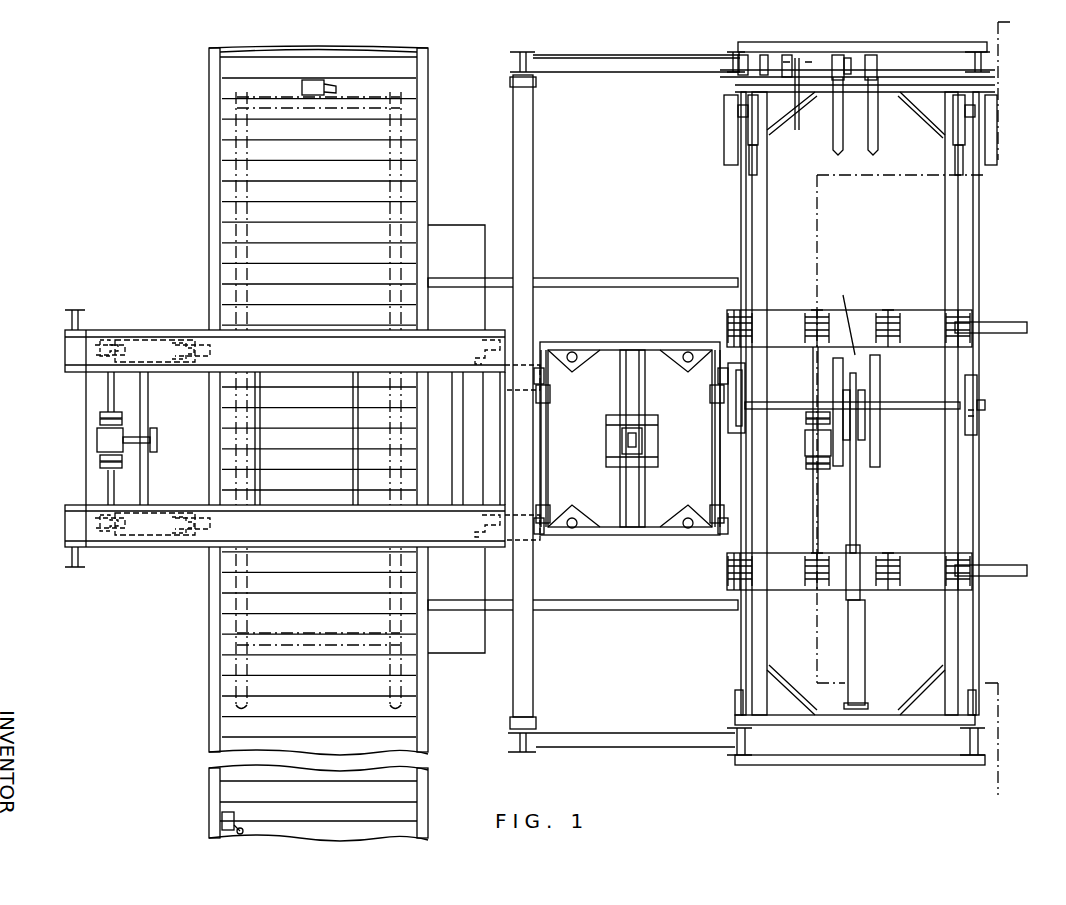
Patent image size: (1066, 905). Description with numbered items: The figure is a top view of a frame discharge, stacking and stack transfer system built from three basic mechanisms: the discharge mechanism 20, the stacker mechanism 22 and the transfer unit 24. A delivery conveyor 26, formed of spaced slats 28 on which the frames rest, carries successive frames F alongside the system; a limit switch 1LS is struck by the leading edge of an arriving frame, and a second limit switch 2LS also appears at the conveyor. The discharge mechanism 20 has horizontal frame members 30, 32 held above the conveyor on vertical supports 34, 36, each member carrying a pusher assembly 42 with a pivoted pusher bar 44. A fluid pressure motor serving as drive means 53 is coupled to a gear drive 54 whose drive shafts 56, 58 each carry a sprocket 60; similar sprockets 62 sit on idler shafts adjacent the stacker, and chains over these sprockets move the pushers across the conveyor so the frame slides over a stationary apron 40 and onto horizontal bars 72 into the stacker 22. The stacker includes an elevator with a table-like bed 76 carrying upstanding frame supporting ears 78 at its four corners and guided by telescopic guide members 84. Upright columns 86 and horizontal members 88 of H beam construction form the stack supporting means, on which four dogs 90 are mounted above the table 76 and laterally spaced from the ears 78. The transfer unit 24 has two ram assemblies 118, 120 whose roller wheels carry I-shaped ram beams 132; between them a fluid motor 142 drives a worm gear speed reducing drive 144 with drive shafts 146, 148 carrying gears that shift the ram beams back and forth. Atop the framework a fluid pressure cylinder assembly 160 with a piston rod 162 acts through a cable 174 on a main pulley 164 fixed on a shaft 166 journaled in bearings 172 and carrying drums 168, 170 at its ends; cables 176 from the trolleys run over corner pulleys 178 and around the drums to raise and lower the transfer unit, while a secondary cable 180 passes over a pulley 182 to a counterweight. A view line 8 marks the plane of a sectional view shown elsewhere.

The frame F is at (238, 186).
The slats 28 is at (233, 104).
The limit switch 1LS is at (310, 82).
The limit switch 2LS is at (222, 820).
The delivery conveyor 26 is at (312, 728).
The stationary apron 40 is at (468, 640).
The horizontal bars 72 is at (592, 278).
The sprocket 60 is at (78, 350).
The horizontal frame member 32 is at (110, 332).
The horizontal frame member 30 is at (110, 548).
The vertical support 36 is at (78, 310).
The vertical support 34 is at (72, 567).
The pusher assembly 42 is at (150, 340).
The pusher bar 44 is at (203, 344).
The drive shaft 58 is at (106, 395).
The drive shaft 56 is at (110, 490).
The gear drive 54 is at (105, 440).
The drive means 53 is at (154, 442).
The discharge mechanism 20 is at (160, 562).
The sprockets 62 is at (478, 354).
The horizontal members 88 is at (533, 192).
The upright columns 86 is at (520, 52).
The stacker mechanism 22 is at (643, 547).
The table-like bed 76 is at (594, 462).
The telescopic guide members 84 is at (574, 352).
The frame supporting ears 78 is at (710, 392).
The dogs 90 is at (547, 376).
The cable 176 is at (742, 196).
The pulleys 178 is at (740, 109).
The pulley 182 is at (800, 80).
The secondary cable 180 is at (797, 130).
The ram beam 132 is at (1012, 322).
The ram assembly 120 is at (890, 300).
The ram assembly 118 is at (893, 547).
The main pulley 164 is at (844, 315).
The shaft 166 is at (895, 402).
The drum 168 is at (979, 394).
The cable 174 is at (850, 492).
The worm gear speed reducing drive 144 is at (808, 446).
The drive shaft 146 is at (815, 540).
The piston rod 162 is at (856, 560).
The fluid pressure cylinder assembly 160 is at (873, 651).
The motive means 142 is at (855, 440).
The bearings 172 is at (837, 408).
The drum 170 is at (742, 380).
The drive shaft 148 is at (835, 378).
The transfer unit 24 is at (987, 495).
The section line 8 is at (1005, 782).